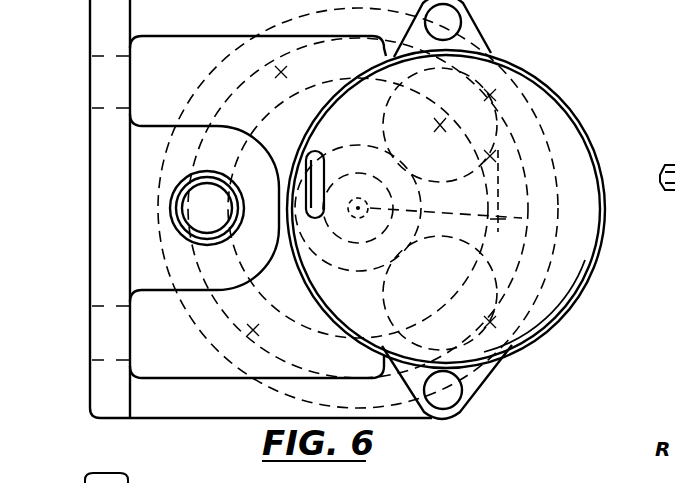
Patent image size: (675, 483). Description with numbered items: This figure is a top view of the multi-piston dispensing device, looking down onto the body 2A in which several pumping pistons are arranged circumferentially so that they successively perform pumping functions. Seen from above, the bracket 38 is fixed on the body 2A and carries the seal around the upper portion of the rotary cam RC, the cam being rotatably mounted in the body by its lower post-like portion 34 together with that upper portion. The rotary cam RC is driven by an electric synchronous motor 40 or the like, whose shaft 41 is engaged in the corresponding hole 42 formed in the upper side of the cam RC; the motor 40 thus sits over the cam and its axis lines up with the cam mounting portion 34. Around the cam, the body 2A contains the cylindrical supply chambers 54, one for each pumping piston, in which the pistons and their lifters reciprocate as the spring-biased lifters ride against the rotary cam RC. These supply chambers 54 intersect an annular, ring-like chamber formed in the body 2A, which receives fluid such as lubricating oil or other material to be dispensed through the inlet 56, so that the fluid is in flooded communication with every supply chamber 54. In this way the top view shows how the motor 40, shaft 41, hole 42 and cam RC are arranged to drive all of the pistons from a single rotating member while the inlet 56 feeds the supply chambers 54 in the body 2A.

The body 2A is at (556, 97).
The rotary cam RC is at (503, 182).
The lower post-like portion 34 is at (505, 219).
The bracket 38 is at (90, 276).
The electric synchronous motor 40 is at (588, 281).
The shaft 41 is at (357, 196).
The hole 42 is at (372, 208).
The cylindrical supply chambers 54 is at (281, 72).
The inlet 56 is at (190, 210).